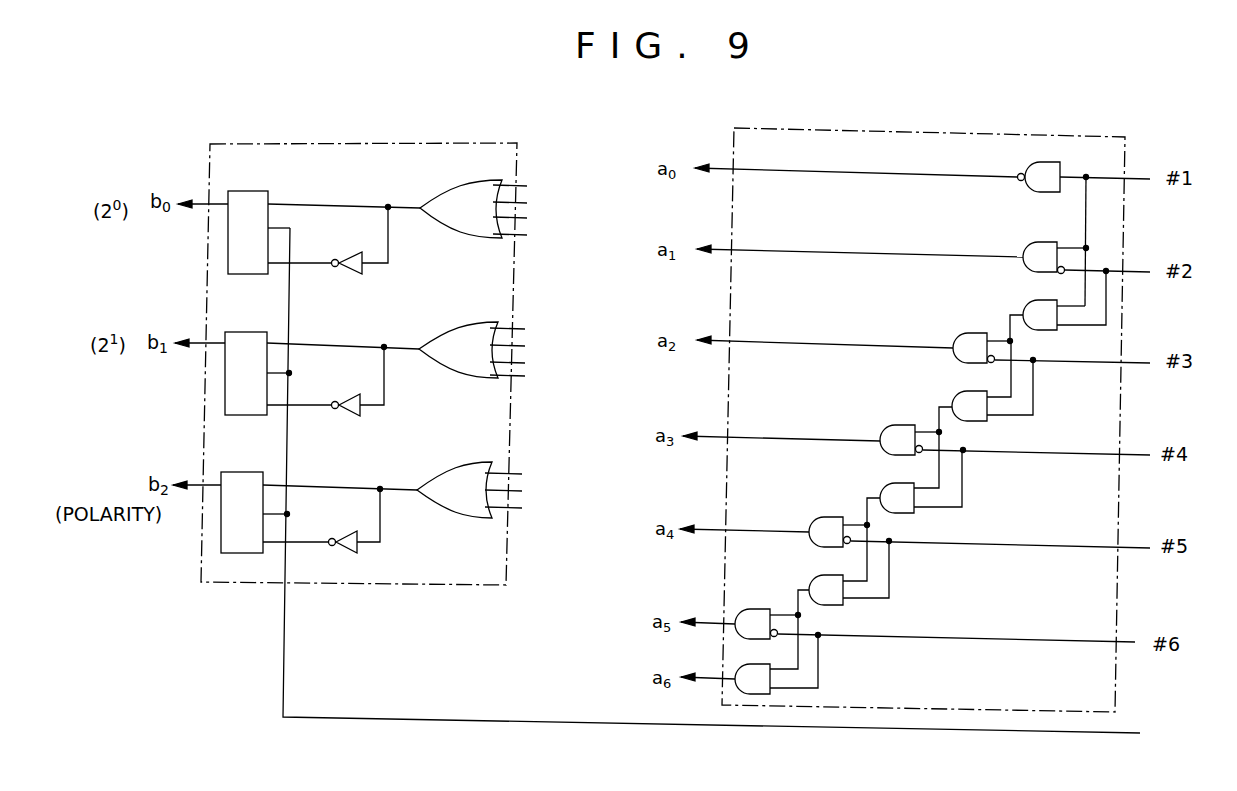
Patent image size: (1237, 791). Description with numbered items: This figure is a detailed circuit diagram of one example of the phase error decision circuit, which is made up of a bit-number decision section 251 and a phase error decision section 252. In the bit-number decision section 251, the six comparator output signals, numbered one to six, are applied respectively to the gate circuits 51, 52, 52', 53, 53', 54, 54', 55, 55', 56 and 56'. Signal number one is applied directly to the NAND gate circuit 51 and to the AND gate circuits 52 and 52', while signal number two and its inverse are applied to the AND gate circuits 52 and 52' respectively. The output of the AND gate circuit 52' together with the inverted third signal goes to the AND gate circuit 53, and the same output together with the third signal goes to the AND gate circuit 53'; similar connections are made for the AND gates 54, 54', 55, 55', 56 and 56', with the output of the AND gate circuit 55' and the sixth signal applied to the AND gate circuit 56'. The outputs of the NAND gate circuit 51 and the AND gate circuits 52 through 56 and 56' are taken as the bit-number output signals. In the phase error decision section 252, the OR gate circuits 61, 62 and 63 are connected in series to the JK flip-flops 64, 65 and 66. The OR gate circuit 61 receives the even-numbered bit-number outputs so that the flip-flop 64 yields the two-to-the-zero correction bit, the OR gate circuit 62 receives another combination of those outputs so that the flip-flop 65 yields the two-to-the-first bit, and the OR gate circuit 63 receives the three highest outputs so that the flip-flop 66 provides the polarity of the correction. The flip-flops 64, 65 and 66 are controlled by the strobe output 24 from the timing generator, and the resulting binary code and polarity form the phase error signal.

The output from the timing generator 24 is at (400, 719).
The NAND gate circuit 51 is at (1043, 146).
The AND gate circuit 52 is at (923, 246).
The AND gate circuit 52' is at (1057, 307).
The AND gate circuit 53 is at (923, 336).
The AND gate circuit 53' is at (985, 388).
The AND gate circuit 54 is at (916, 428).
The AND gate circuit 54' is at (914, 480).
The AND gate circuit 55 is at (915, 521).
The AND gate circuit 55' is at (843, 571).
The AND gate circuit 56 is at (908, 614).
The AND gate circuit 56' is at (749, 654).
The OR gate circuit 61 is at (468, 163).
The OR gate circuit 62 is at (466, 305).
The OR gate circuit 63 is at (462, 445).
The JK flip-flop 64 is at (233, 191).
The JK flip-flop 65 is at (231, 332).
The JK flip-flop 66 is at (227, 472).
The bit-number decision section 251 is at (888, 131).
The phase error decision section 252 is at (387, 143).